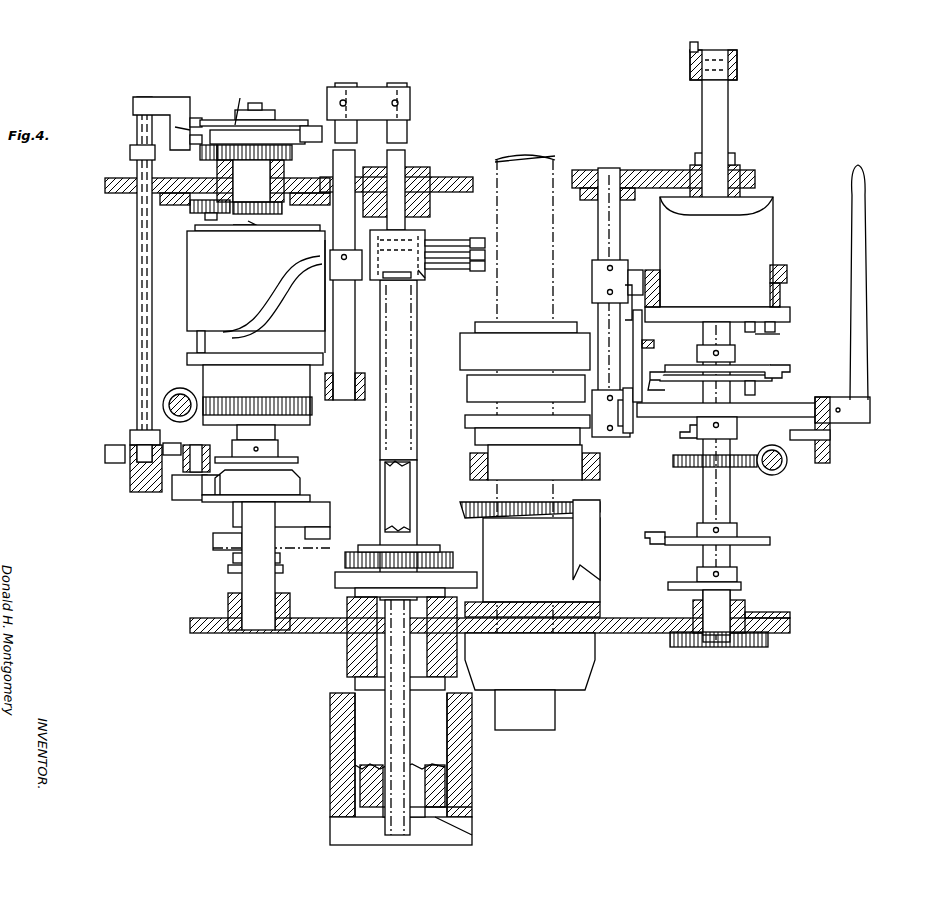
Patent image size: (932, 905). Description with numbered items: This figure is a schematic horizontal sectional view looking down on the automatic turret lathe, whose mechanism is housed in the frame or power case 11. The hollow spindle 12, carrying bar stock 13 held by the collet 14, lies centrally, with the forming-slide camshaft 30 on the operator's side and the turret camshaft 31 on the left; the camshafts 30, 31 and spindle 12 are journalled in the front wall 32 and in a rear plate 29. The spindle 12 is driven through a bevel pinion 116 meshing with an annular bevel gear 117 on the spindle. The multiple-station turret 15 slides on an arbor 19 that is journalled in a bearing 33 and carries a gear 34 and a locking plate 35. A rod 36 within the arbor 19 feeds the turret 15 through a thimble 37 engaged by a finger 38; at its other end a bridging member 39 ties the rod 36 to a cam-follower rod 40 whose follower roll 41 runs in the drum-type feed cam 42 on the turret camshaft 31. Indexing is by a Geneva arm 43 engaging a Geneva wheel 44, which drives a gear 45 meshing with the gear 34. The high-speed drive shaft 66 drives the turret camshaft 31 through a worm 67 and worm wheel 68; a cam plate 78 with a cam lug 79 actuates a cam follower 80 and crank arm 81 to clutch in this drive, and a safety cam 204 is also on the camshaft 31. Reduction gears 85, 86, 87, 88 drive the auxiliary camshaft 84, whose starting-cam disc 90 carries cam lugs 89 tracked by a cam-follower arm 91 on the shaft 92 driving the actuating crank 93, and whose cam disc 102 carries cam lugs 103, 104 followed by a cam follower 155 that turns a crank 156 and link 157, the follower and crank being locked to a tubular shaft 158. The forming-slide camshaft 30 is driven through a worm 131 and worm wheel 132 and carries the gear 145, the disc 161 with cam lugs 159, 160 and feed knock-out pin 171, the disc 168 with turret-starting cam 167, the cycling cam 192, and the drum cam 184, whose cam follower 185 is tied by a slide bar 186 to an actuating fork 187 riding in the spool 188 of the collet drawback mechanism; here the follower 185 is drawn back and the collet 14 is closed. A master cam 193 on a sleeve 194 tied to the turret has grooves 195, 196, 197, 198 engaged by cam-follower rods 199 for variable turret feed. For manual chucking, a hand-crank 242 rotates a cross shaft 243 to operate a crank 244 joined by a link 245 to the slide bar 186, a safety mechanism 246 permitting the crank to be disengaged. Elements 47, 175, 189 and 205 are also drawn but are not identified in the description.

The frame or power case 11 is at (634, 640).
The spindle 12 is at (590, 660).
The bar stock 13 is at (555, 710).
The collet 14 is at (485, 665).
The multiple-station turret 15 is at (470, 760).
The arbor or stem 19 is at (447, 783).
The rear plate or member 29 is at (470, 185).
The forming-slide camshaft 30 is at (730, 510).
The turret camshaft 31 is at (258, 630).
The front wall 32 is at (320, 626).
The bearing 33 is at (350, 655).
The gear 34 is at (440, 552).
The locking plate 35 is at (458, 572).
The rod 36 is at (400, 476).
The thimble 37 is at (370, 826).
The finger 38 is at (440, 826).
The bridging member 39 is at (366, 88).
The cam-follower rod 40 is at (325, 320).
The follower roll 41 is at (300, 256).
The drum-type feed cam 42 is at (190, 298).
The Geneva arm 43 is at (320, 515).
The Geneva wheel 44 is at (213, 543).
The gear 45 is at (233, 560).
The washer 47 is at (235, 573).
The high-speed drive shaft 66 is at (190, 400).
The worm 67 is at (172, 390).
The worm wheel 68 is at (278, 398).
The cam plate 78 is at (308, 496).
The cam lug 79 is at (200, 500).
The cam follower 80 is at (178, 497).
The crank arm 81 is at (222, 478).
The auxiliary camshaft 84 is at (258, 102).
The reduction gear 85 is at (250, 198).
The reduction gear 86 is at (192, 212).
The reduction gear 87 is at (202, 153).
The reduction gear 88 is at (292, 152).
The cam lug 89 is at (196, 118).
The starting-cam disc 90 is at (285, 120).
The cam-follower arm 91 is at (168, 100).
The longitudinally extending shaft 92 is at (137, 122).
The actuating crank 93 is at (135, 490).
The cam disc 102 is at (234, 103).
The cam lug 103 is at (172, 127).
The cam lug 104 is at (312, 126).
The bevel pinion 116 is at (585, 570).
The annular bevel gear 117 is at (525, 512).
The worm 131 is at (783, 470).
The worm wheel 132 is at (696, 467).
The gear 145 is at (712, 647).
The cam follower 155 is at (130, 155).
The crank 156 is at (130, 435).
The link 157 is at (172, 446).
The shaft 158 is at (136, 232).
The cam lug 159 is at (782, 366).
The cam lug 160 is at (655, 382).
The disc 161 is at (742, 362).
The turret-starting cam 167 is at (655, 532).
The disc 168 is at (762, 545).
The feed knock-out pin 171 is at (755, 388).
The plate 175 is at (672, 587).
The drum cam 184 is at (787, 270).
The cam follower 185 is at (660, 290).
The slide bar 186 is at (600, 238).
The actuating fork 187 is at (592, 408).
The spool 188 is at (457, 416).
The screws 189 is at (776, 332).
The cycling cam 192 is at (738, 68).
The master cam 193 is at (418, 248).
The sleeve 194 is at (410, 338).
The groove or flat 195 is at (352, 240).
The groove or flat 196 is at (376, 258).
The groove or flat 197 is at (419, 280).
The groove or flat 198 is at (397, 279).
The cam-follower rods 199 is at (455, 272).
The safety cam 204 is at (290, 460).
The block 205 is at (680, 435).
The hand-crank 242 is at (866, 240).
The cross shaft 243 is at (764, 417).
The crank 244 is at (630, 388).
The link 245 is at (642, 363).
The safety mechanism 246 is at (853, 430).